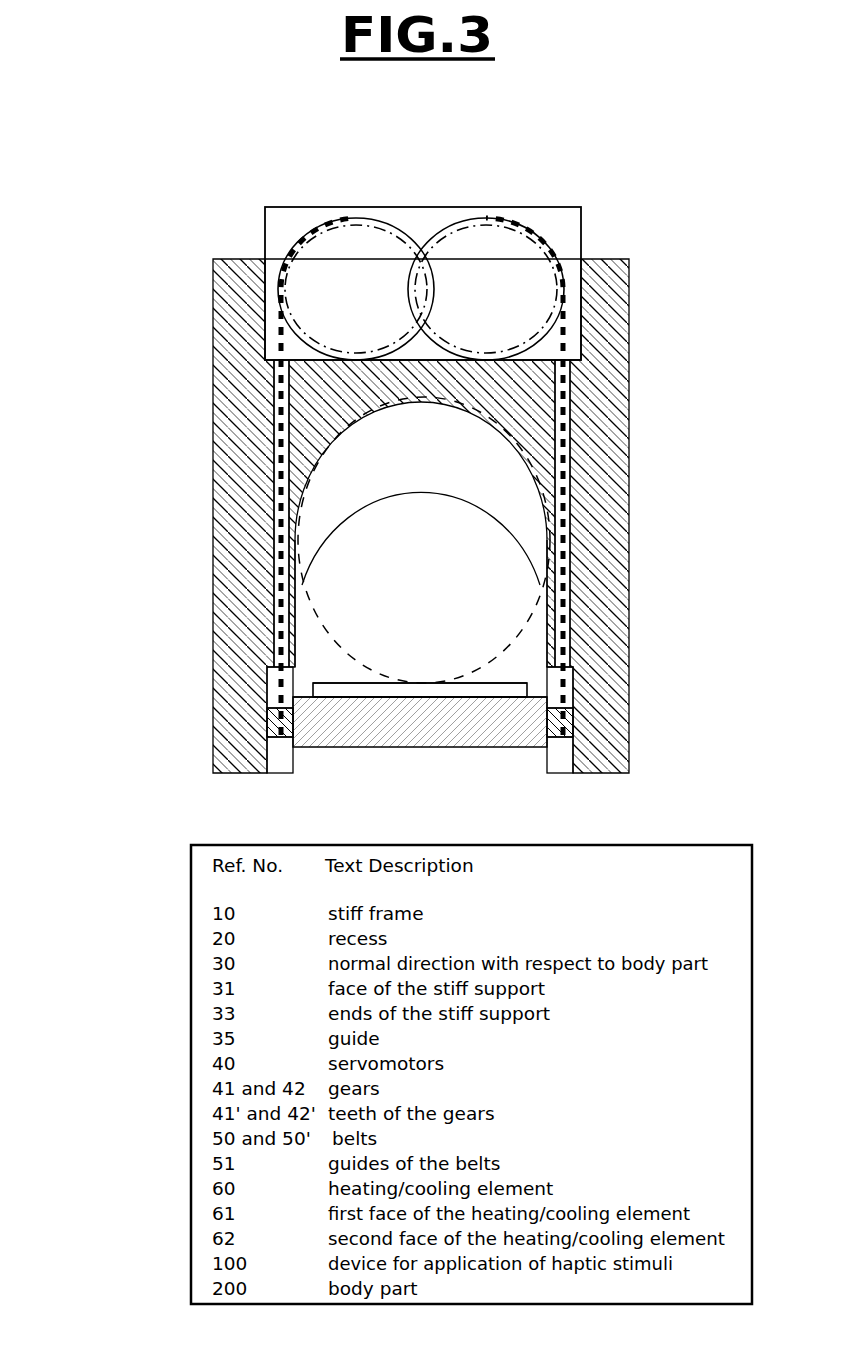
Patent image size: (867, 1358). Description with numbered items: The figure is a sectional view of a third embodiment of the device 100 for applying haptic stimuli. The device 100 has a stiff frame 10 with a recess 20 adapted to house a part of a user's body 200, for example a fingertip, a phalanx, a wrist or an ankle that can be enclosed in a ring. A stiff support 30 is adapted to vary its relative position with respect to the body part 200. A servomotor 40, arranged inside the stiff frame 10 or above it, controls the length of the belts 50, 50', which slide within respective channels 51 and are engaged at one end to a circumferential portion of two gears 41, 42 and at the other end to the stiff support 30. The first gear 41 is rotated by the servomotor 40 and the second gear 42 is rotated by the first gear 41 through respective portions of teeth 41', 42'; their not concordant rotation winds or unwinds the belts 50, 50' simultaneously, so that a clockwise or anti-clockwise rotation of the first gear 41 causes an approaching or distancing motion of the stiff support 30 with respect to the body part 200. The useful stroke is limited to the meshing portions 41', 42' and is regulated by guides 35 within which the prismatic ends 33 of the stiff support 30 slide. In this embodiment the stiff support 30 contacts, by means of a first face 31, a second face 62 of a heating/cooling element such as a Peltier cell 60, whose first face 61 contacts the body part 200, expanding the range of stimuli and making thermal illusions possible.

The stiff frame 10 is at (213, 283).
The recess 20 is at (337, 672).
The stiff support 30 is at (450, 722).
The first face 31 is at (313, 684).
The prismatic ends 33 is at (267, 727).
The guides 35 is at (285, 779).
The servomotor 40 is at (259, 204).
The first gear 41 is at (356, 256).
The second gear 42 is at (486, 250).
The portion of teeth 41' is at (356, 289).
The portion of teeth 42' is at (486, 289).
The belt 50 is at (577, 476).
The belt 50' is at (254, 476).
The channels 51 is at (273, 425).
The Peltier cell 60 is at (488, 692).
The first face 61 is at (273, 667).
The second face 62 is at (518, 703).
The device 100 is at (668, 206).
The part of a user's body 200 is at (502, 571).